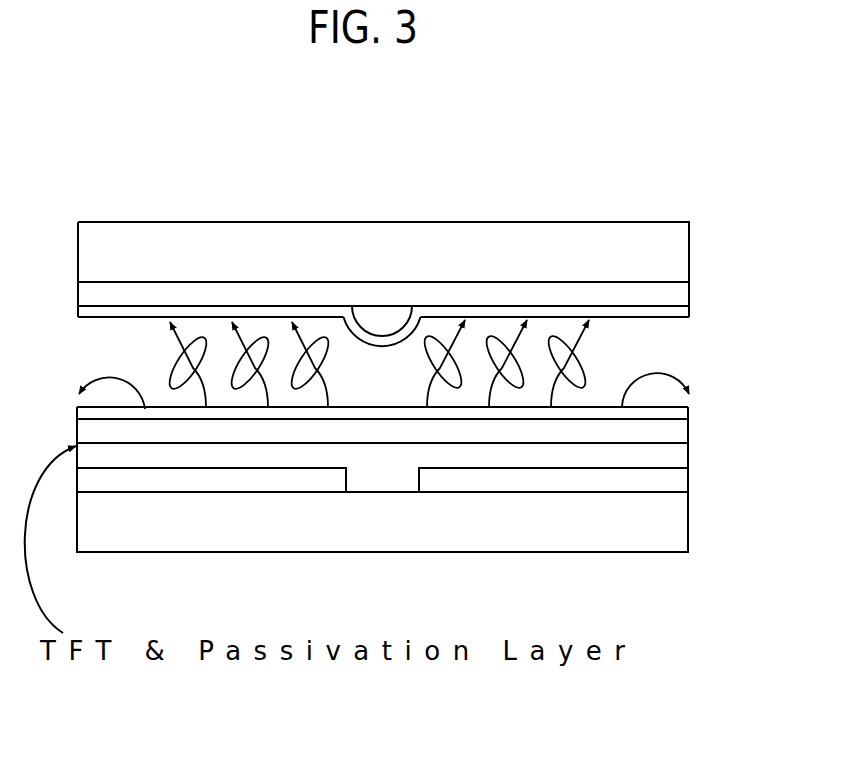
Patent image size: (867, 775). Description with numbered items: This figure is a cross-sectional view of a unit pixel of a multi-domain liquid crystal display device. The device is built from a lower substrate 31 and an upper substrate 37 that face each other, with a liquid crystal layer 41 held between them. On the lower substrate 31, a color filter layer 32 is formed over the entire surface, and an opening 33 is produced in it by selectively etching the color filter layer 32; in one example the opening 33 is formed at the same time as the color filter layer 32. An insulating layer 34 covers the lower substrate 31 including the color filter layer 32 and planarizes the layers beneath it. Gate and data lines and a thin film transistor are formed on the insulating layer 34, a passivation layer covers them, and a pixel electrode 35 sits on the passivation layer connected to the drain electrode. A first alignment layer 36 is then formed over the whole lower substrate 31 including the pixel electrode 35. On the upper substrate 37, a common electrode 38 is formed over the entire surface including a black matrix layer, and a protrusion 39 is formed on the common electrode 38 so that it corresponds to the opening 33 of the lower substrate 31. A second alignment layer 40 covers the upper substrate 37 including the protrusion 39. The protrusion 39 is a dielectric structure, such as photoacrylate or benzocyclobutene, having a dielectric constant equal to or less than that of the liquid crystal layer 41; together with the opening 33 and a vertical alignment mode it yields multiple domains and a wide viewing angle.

The lower substrate 31 is at (689, 524).
The color filter layer 32 is at (689, 482).
The opening 33 is at (388, 482).
The insulating layer 34 is at (689, 455).
The pixel electrode 35 is at (689, 428).
The first alignment layer 36 is at (690, 412).
The upper substrate 37 is at (690, 254).
The common electrode 38 is at (690, 291).
The protrusion 39 is at (382, 314).
The second alignment layer 40 is at (690, 313).
The liquid crystal layer 41 is at (578, 362).